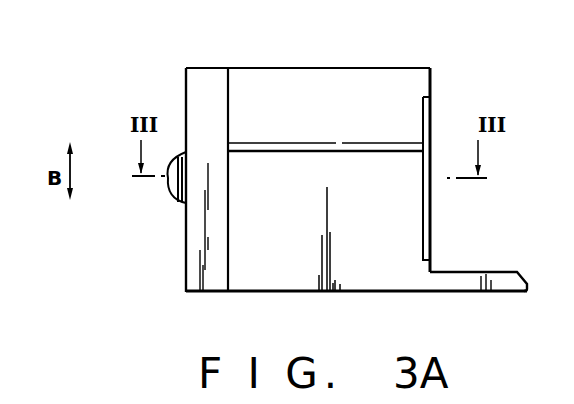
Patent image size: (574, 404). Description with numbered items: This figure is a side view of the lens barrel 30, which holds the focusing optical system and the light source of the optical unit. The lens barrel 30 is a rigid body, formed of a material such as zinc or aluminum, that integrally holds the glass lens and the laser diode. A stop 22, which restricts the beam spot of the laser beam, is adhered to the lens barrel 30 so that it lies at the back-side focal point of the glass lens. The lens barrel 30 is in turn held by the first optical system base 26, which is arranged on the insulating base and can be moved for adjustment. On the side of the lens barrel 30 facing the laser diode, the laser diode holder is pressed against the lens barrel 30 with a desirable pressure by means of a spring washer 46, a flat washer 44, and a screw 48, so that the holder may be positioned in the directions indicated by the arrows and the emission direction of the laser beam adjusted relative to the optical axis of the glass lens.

The lens barrel 30 is at (413, 67).
The stop 22 is at (429, 107).
The first optical system base 26 is at (467, 272).
The flat washer 44 is at (185, 207).
The spring washer 46 is at (182, 150).
The screw 48 is at (174, 190).